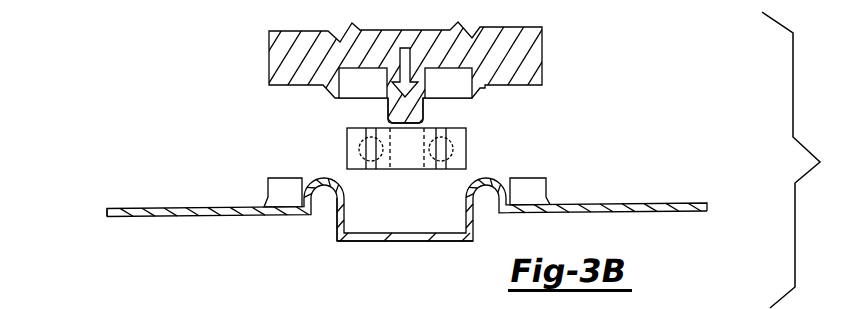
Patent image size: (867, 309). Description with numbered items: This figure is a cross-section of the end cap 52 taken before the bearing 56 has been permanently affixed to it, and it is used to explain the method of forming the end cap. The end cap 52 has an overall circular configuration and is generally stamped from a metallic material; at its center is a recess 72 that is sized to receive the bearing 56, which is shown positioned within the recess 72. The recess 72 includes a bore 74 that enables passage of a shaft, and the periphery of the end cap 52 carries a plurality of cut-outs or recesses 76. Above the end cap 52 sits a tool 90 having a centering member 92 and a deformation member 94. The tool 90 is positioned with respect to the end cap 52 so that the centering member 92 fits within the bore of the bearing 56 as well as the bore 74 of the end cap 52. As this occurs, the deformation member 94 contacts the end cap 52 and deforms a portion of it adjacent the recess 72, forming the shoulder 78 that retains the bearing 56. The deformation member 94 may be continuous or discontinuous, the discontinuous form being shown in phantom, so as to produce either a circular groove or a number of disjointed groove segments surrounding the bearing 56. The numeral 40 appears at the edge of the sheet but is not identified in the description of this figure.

The tool 90 is at (263, 64).
The centering member 92 is at (395, 106).
The deformation member 94 is at (478, 100).
The end cap 52 is at (159, 152).
The bearing 56 is at (394, 159).
The central recess 72 is at (395, 209).
The bore 74 is at (403, 241).
The shoulder 78 is at (364, 232).
The cut-outs or recesses 76 is at (122, 209).
The housing 40 is at (201, 303).